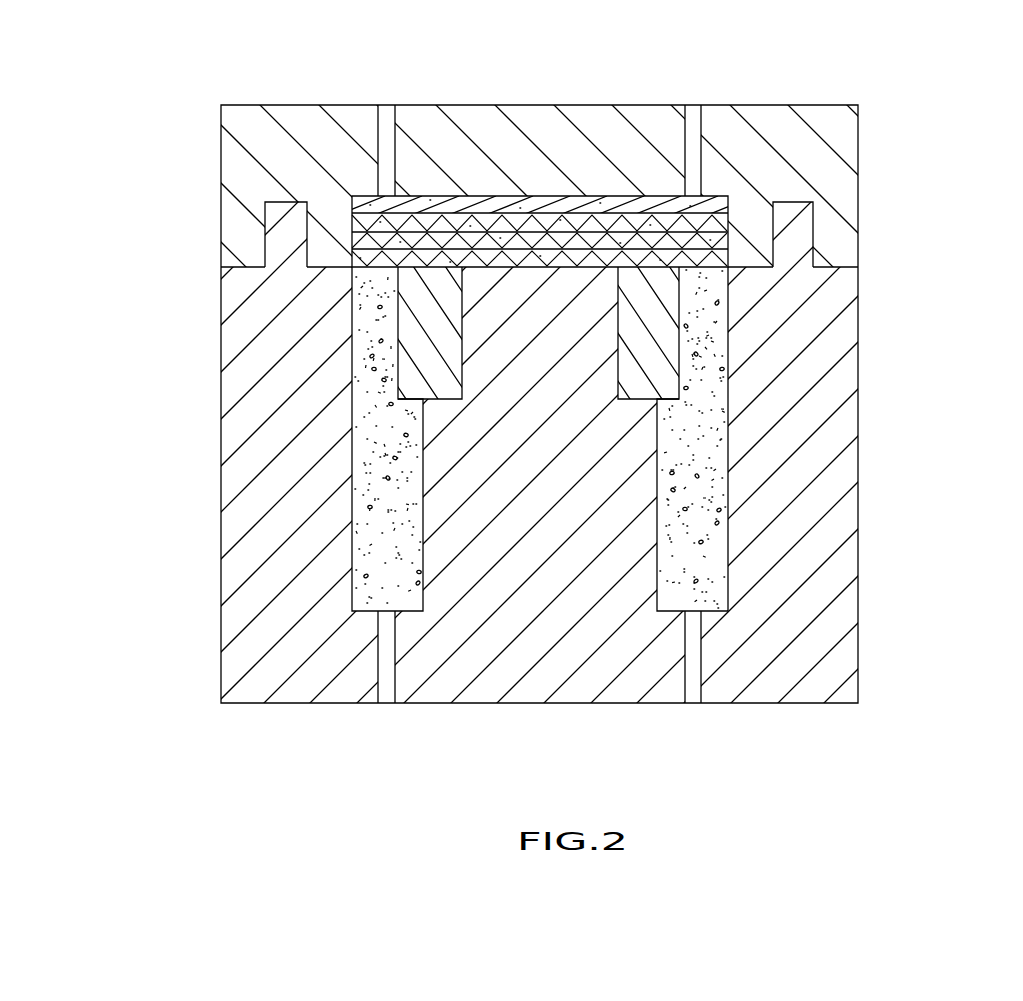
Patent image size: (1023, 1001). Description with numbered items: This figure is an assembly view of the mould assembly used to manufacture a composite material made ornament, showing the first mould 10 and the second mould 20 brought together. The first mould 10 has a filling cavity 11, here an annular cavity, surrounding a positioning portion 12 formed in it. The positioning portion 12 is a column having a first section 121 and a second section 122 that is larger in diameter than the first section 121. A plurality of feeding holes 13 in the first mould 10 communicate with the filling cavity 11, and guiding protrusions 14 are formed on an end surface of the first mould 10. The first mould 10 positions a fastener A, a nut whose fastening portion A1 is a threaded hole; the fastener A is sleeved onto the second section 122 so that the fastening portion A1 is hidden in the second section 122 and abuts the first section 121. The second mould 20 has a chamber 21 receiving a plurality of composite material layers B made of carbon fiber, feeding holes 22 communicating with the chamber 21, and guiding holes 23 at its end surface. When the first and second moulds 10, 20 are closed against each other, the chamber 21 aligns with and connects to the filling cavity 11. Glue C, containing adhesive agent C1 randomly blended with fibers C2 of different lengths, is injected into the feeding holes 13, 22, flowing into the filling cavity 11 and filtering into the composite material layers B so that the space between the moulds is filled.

The first mould 10 is at (213, 628).
The filling cavity 11 is at (725, 585).
The positioning portion 12 is at (511, 405).
The first section 121 is at (630, 517).
The second section 122 is at (593, 353).
The feeding holes 13 is at (385, 685).
The guiding protrusions 14 is at (280, 253).
The second mould 20 is at (235, 100).
The chamber 21 is at (447, 190).
The feeding holes 22 is at (382, 140).
The guiding holes 23 is at (280, 200).
The fastener A is at (668, 317).
The fastening portion A1 is at (617, 288).
The composite material layers B is at (492, 200).
The glue C is at (417, 439).
The adhesive agent C1 is at (353, 385).
The fibers C2 is at (367, 425).